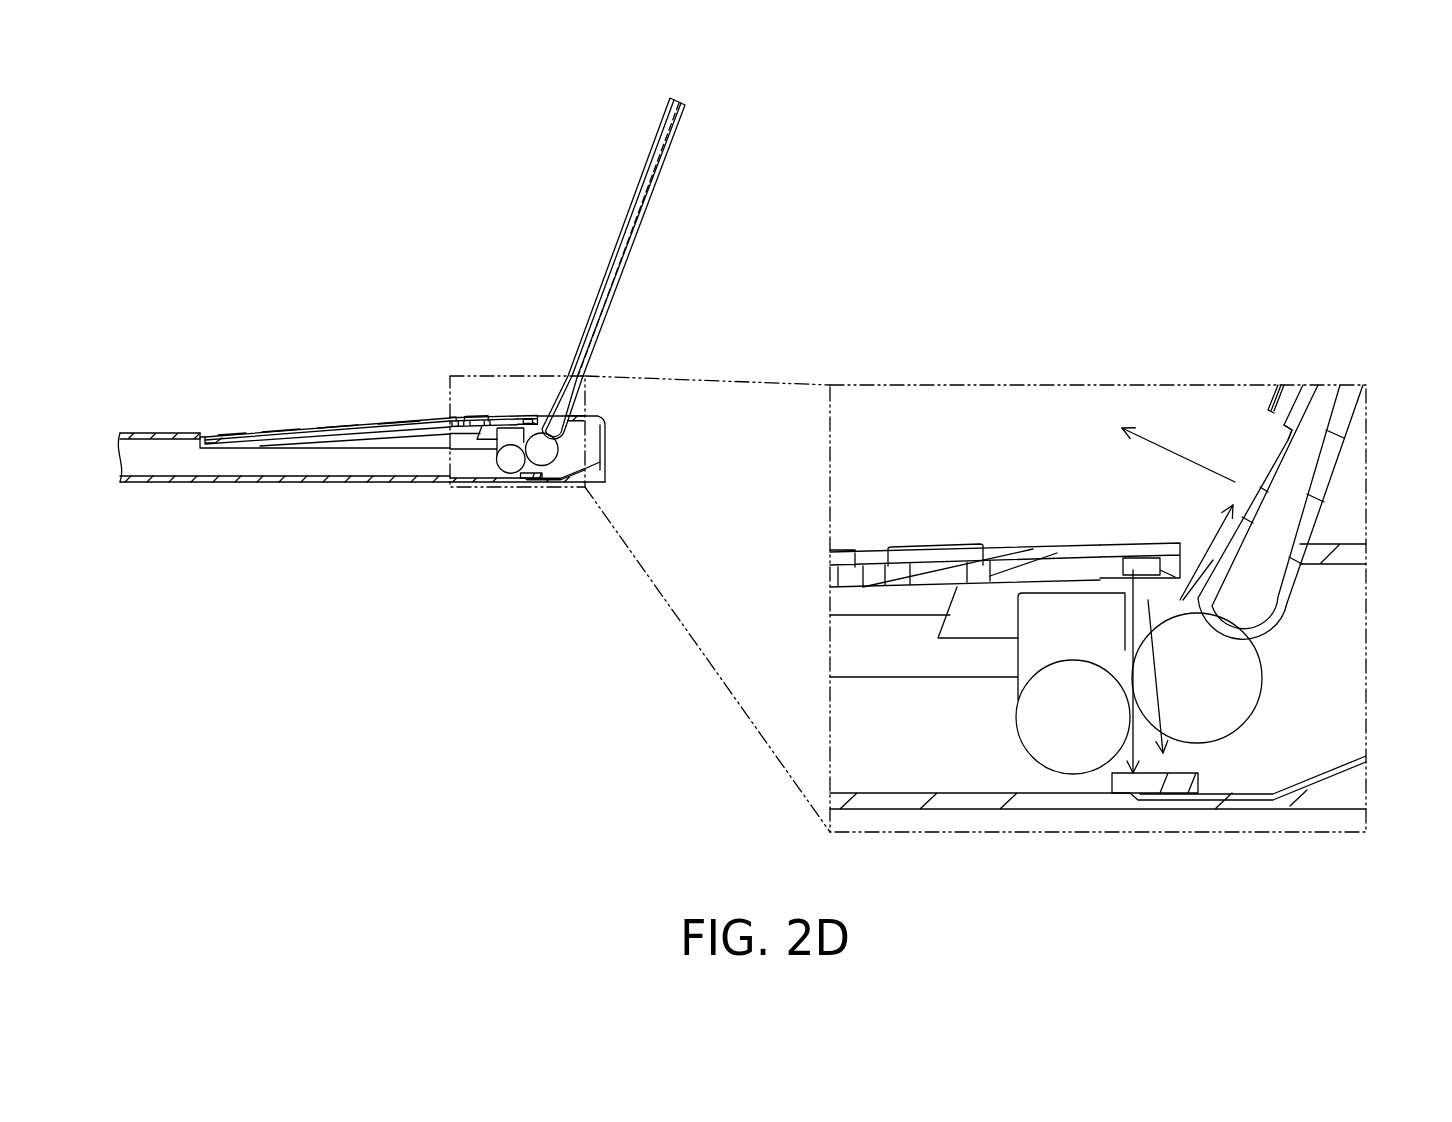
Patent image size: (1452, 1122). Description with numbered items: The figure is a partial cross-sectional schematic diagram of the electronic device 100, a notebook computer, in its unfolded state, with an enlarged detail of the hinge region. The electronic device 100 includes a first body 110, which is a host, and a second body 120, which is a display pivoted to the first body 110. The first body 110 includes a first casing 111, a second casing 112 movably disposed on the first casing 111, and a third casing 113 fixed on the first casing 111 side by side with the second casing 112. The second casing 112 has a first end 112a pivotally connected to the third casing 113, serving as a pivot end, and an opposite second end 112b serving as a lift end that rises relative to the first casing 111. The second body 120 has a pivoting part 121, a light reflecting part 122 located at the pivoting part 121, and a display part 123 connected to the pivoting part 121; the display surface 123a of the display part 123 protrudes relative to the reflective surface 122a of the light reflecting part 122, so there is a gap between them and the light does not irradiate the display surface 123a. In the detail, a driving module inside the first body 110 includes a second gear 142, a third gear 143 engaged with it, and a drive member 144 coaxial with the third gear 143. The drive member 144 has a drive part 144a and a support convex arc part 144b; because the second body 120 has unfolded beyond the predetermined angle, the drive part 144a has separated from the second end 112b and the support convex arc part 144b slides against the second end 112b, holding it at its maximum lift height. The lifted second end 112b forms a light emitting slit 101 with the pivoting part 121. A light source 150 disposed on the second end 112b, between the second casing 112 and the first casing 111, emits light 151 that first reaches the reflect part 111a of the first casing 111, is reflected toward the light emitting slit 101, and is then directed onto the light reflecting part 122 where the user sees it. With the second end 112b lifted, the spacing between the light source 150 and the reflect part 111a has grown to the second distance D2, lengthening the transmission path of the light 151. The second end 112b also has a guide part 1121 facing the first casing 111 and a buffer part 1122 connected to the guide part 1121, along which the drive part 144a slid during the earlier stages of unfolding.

The electronic device 100 is at (157, 568).
The light emitting slit 101 is at (1190, 543).
The first body 110 is at (290, 518).
The first casing 111 is at (863, 802).
The reflect part 111a is at (1182, 794).
The second casing 112 is at (388, 427).
The first end 112a is at (203, 437).
The second end 112b is at (1140, 567).
The third casing 113 is at (138, 433).
The guide part 1121 is at (940, 592).
The buffer part 1122 is at (1170, 578).
The second body 120 is at (727, 152).
The pivoting part 121 is at (1273, 480).
The light reflecting part 122 is at (1248, 511).
The reflective surface 122a is at (1263, 468).
The display part 123 is at (1297, 398).
The display surface 123a is at (1283, 402).
The second gear 142 is at (1242, 683).
The third gear 143 is at (1048, 756).
The drive member 144 is at (1033, 648).
The drive part 144a is at (985, 600).
The support convex arc part 144b is at (1037, 553).
The light source 150 is at (1072, 567).
The light 151 is at (1200, 570).
The second distance D2 is at (1133, 660).